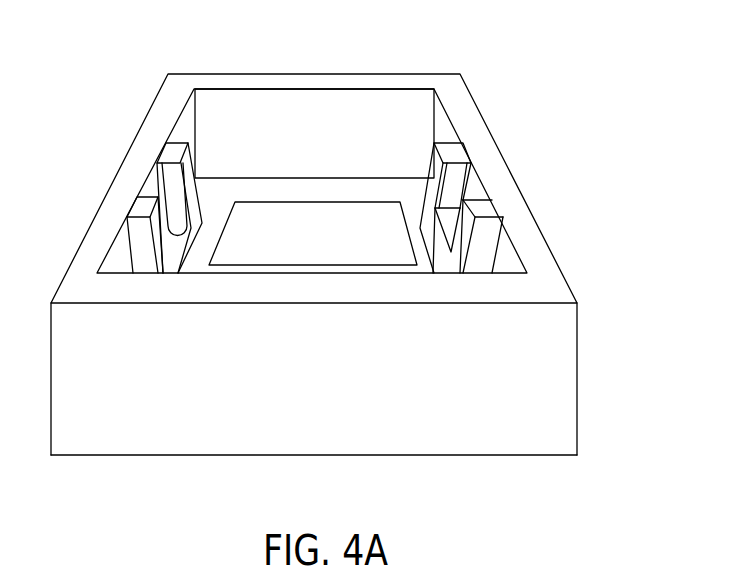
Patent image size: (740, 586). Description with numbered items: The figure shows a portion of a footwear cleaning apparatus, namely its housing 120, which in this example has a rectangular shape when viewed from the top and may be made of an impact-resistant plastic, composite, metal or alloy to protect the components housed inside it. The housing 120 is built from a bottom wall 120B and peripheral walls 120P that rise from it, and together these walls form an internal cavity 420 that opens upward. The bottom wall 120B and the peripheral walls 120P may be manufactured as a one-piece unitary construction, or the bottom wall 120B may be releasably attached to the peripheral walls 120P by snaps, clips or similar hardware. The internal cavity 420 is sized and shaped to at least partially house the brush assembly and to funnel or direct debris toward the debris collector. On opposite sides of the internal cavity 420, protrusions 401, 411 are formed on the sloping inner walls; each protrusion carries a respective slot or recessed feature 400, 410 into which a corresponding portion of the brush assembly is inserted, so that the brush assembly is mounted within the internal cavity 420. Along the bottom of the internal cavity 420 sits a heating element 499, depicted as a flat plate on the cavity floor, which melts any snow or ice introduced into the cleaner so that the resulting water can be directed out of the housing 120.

The housing 120 is at (355, 73).
The peripheral walls 120P is at (570, 380).
The bottom wall 120B is at (110, 455).
The internal cavity 420 is at (260, 106).
The heating element 499 is at (360, 213).
The recessed feature 410 is at (145, 172).
The protrusion 411 is at (135, 232).
The recessed feature 400 is at (481, 168).
The protrusion 401 is at (486, 246).